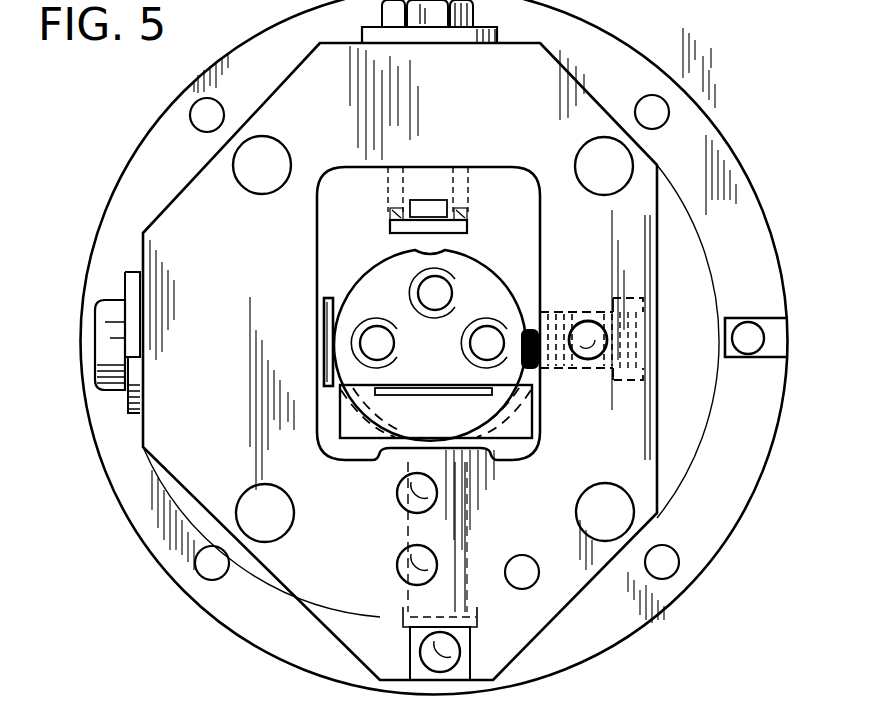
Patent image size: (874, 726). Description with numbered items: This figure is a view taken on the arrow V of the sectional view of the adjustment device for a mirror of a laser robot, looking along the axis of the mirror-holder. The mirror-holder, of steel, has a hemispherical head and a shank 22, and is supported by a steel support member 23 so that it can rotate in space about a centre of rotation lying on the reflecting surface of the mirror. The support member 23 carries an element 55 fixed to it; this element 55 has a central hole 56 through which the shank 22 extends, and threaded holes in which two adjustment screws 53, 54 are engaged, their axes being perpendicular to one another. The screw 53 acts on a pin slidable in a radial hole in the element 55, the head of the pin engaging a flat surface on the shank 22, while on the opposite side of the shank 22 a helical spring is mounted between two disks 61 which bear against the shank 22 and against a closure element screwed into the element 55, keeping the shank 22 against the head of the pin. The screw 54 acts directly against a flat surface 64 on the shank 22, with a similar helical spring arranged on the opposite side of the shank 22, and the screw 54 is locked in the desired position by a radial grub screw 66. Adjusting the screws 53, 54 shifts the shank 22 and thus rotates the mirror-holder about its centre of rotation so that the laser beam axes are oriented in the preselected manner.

The shank 22 is at (490, 283).
The support member 23 is at (732, 494).
The adjustment screw 53 is at (460, 655).
The adjustment screw 54 is at (663, 327).
The element 55 is at (307, 567).
The central hole 56 is at (500, 186).
The disks 61 is at (333, 300).
The flat surface 64 is at (522, 300).
The radial grub screw 66 is at (588, 360).